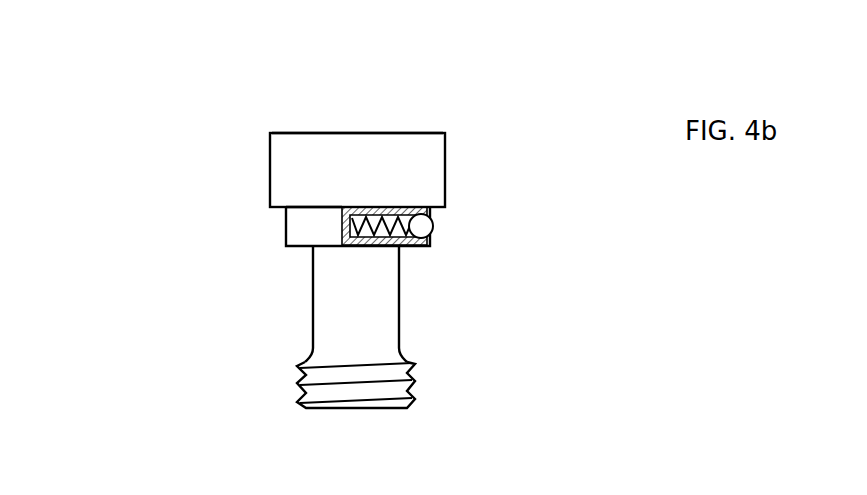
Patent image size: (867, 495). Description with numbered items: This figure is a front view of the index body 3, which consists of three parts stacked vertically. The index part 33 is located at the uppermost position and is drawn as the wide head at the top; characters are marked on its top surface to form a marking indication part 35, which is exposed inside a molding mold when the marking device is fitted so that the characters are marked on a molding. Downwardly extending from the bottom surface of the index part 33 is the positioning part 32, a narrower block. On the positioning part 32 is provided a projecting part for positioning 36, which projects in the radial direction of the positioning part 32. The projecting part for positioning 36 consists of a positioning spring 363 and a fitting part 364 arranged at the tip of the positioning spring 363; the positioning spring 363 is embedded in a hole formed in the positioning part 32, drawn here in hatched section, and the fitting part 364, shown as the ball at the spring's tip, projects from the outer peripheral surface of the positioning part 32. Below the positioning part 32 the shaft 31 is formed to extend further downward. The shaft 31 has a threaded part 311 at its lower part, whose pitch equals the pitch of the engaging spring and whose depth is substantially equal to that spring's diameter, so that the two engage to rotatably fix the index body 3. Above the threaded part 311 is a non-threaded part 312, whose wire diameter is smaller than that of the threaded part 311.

The index body 3 is at (459, 89).
The shaft 31 is at (108, 362).
The threaded part 311 is at (297, 380).
The non-threaded part 312 is at (310, 328).
The positioning part 32 is at (283, 223).
The index part 33 is at (268, 152).
The marking indication part 35 is at (310, 133).
The projecting part for positioning 36 is at (435, 225).
The positioning spring 363 is at (398, 246).
The fitting part 364 is at (430, 218).